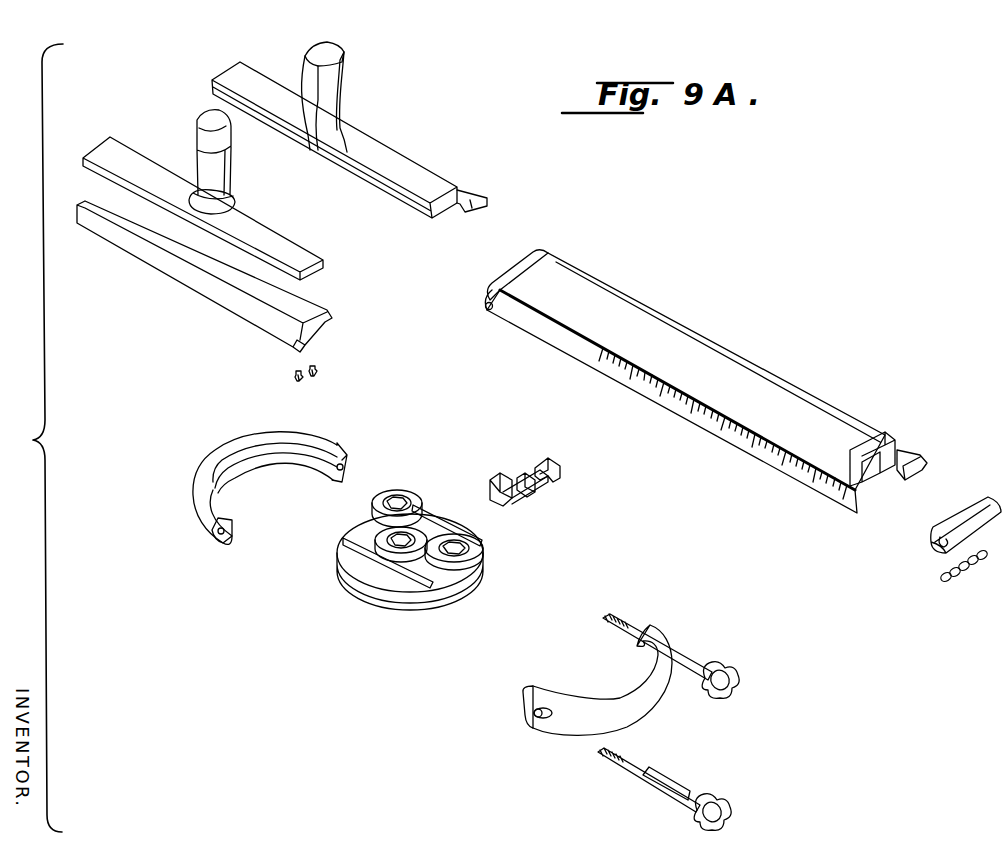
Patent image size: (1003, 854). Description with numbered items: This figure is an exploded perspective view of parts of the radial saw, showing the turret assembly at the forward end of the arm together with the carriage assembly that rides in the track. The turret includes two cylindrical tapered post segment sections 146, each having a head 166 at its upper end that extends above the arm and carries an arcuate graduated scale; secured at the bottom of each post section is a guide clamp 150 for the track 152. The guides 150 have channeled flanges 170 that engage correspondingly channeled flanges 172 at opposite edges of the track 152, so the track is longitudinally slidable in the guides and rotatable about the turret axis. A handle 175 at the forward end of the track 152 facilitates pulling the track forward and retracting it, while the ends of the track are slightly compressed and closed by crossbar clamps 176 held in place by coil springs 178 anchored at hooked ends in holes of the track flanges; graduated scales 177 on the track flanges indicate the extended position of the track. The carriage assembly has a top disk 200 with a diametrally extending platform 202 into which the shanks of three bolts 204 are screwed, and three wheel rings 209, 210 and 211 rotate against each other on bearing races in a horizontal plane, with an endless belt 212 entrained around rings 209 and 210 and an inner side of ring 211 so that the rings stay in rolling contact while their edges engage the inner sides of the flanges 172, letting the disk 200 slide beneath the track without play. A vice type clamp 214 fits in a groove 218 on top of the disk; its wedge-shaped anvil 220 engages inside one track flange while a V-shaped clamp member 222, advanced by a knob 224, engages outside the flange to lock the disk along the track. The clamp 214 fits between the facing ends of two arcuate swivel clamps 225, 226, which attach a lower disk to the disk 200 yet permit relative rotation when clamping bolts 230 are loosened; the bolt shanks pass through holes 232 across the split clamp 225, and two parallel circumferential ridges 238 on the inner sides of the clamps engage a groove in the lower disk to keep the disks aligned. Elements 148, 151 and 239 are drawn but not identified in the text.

The post segment section 146 is at (323, 112).
The guide rail 148 is at (407, 173).
The guide clamp 150 is at (407, 150).
The screws 151 is at (297, 373).
The track 152 is at (685, 386).
The head 166 is at (195, 128).
The channeled flange 170 is at (482, 196).
The channeled flange 172 is at (557, 340).
The handle 175 is at (877, 440).
The crossbar clamp 176 is at (930, 523).
The graduated scale 177 is at (740, 453).
The coil spring 178 is at (982, 580).
The top disk 200 is at (413, 544).
The platform 202 is at (360, 528).
The bolt 204 is at (390, 495).
The ring 209 is at (410, 495).
The ring 210 is at (477, 543).
The ring 211 is at (399, 550).
The endless belt 212 is at (433, 510).
The clamp 214 is at (510, 497).
The groove 218 is at (496, 449).
The anvil 220 is at (530, 502).
The clamp member 222 is at (540, 497).
The knob 224 is at (550, 465).
The swivel clamp 225 is at (626, 680).
The swivel clamp 226 is at (298, 476).
The clamping bolt 230 is at (690, 790).
The hole 232 is at (540, 710).
The circumferential ridge 238 is at (224, 457).
The groove 239 is at (413, 612).